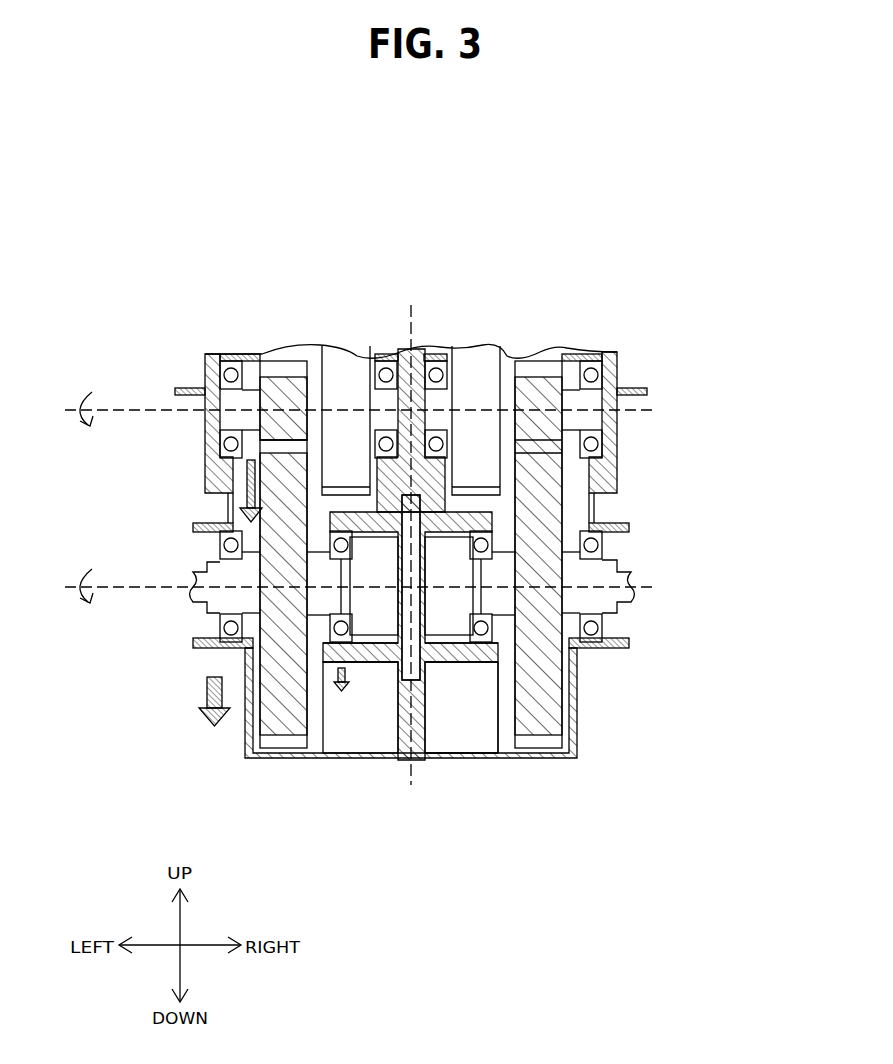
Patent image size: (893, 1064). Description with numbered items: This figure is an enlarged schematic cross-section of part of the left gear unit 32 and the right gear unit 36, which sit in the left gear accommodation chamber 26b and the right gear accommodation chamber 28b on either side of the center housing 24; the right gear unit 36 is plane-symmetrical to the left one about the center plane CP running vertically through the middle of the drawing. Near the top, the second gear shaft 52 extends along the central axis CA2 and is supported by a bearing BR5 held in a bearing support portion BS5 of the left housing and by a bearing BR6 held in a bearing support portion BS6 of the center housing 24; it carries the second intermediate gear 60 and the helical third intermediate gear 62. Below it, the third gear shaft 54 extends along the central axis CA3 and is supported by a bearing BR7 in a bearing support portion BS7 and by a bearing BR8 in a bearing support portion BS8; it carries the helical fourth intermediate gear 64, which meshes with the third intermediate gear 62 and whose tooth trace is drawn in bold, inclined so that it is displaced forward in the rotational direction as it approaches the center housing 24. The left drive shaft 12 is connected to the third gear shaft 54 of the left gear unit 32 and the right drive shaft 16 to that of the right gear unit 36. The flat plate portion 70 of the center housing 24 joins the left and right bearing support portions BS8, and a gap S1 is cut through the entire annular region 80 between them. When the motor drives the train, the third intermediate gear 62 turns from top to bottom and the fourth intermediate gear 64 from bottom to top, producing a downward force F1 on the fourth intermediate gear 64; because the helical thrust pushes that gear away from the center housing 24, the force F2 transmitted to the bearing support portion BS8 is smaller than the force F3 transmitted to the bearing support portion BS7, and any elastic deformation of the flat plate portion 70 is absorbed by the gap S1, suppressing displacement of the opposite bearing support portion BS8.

The second gear shaft 52 is at (255, 364).
The third gear shaft 54 is at (217, 558).
The second intermediate gear 60 is at (337, 370).
The third intermediate gear 62 is at (282, 357).
The fourth intermediate gear 64 is at (268, 742).
The flat plate portion 70 is at (455, 348).
The center housing 24 is at (437, 352).
The left gear unit 32 is at (346, 726).
The right gear unit 36 is at (466, 725).
The left gear accommodation chamber 26b is at (360, 727).
The right gear accommodation chamber 28b is at (490, 722).
The left drive shaft 12 is at (200, 576).
The right drive shaft 16 is at (623, 573).
The annular region 80 is at (378, 590).
The gap S1 is at (450, 645).
The bearing BR5 is at (203, 368).
The bearing support portion BS5 is at (228, 360).
The bearing BR6 is at (382, 362).
The bearing support portion BS6 is at (398, 357).
The bearing BR7 is at (226, 525).
The bearing support portion BS7 is at (215, 528).
The bearing BR8 is at (338, 645).
The bearing support portion BS8 is at (380, 656).
The central axis CA2 is at (655, 411).
The central axis CA3 is at (655, 588).
The center plane CP is at (423, 337).
The downward force F1 is at (246, 487).
The force F2 is at (342, 692).
The force F3 is at (207, 693).